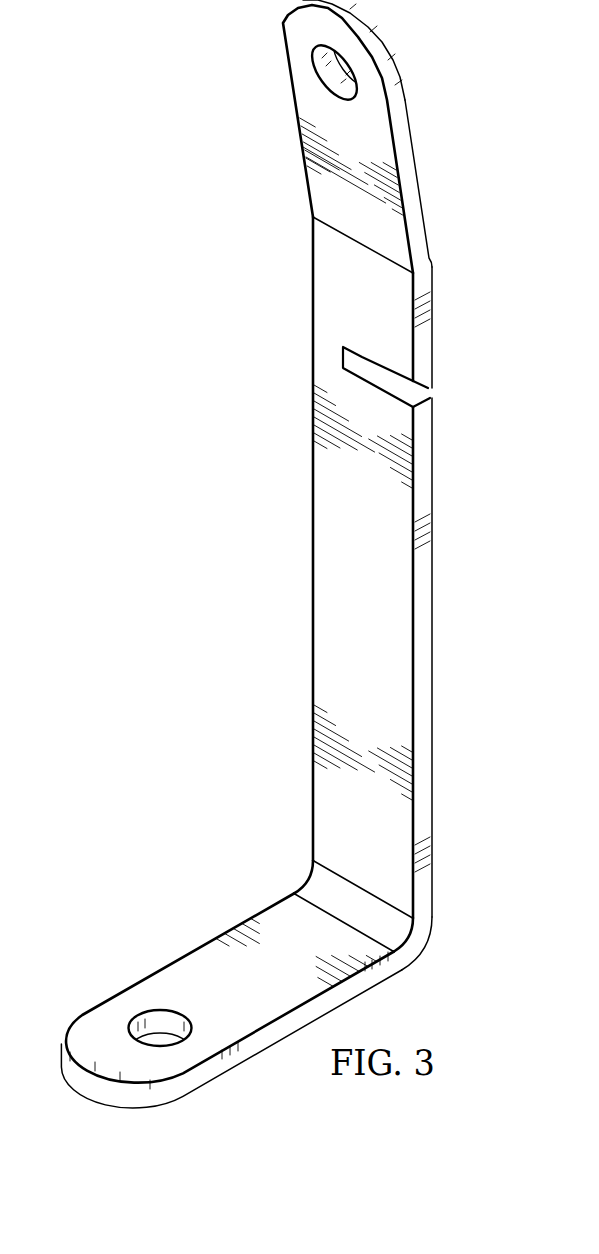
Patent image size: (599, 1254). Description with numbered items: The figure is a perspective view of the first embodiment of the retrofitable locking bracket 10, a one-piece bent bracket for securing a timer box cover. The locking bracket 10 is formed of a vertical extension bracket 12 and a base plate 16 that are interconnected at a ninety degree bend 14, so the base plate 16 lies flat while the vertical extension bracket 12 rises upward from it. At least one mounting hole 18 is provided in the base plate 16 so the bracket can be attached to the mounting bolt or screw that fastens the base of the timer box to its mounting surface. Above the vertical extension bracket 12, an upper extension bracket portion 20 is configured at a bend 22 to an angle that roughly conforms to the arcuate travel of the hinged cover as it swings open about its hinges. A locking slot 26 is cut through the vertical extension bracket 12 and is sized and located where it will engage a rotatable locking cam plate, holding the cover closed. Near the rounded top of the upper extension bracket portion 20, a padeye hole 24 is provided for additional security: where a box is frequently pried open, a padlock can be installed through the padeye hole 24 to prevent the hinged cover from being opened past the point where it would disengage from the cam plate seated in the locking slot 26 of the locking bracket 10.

The locking bracket 10 is at (91, 216).
The vertical extension bracket 12 is at (434, 606).
The 90 degree bend 14 is at (434, 947).
The base plate 16 is at (198, 958).
The mounting hole 18 is at (163, 1017).
The upper extension bracket portion 20 is at (416, 136).
The bend 22 is at (434, 262).
The padeye hole 24 is at (333, 80).
The locking slot 26 is at (426, 388).